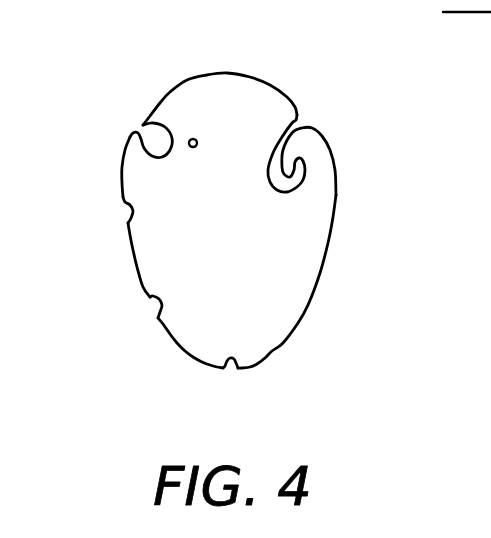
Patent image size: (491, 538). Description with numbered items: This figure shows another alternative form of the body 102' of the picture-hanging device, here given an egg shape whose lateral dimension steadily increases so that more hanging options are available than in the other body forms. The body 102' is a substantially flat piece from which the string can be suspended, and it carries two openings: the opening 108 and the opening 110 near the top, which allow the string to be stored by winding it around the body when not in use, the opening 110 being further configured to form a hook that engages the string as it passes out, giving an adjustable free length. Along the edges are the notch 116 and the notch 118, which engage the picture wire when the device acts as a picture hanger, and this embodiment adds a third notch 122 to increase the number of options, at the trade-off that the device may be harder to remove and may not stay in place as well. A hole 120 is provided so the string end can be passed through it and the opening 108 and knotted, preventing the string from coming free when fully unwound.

The body 102' is at (449, 19).
The opening 108 is at (146, 125).
The opening 110 is at (300, 120).
The notch 116 is at (304, 179).
The notch 118 is at (232, 367).
The hole 120 is at (191, 138).
The third notch 122 is at (154, 304).